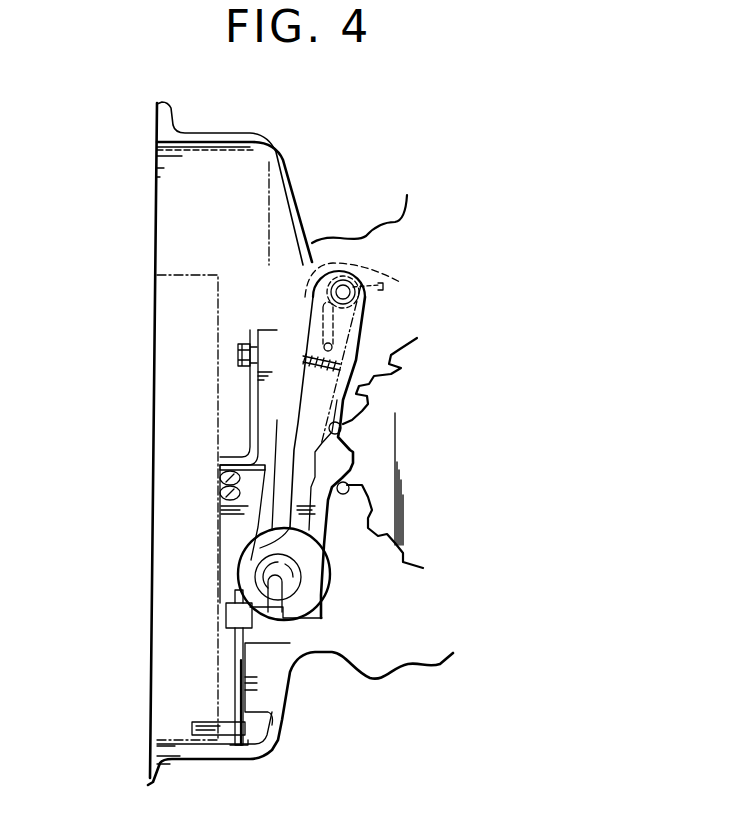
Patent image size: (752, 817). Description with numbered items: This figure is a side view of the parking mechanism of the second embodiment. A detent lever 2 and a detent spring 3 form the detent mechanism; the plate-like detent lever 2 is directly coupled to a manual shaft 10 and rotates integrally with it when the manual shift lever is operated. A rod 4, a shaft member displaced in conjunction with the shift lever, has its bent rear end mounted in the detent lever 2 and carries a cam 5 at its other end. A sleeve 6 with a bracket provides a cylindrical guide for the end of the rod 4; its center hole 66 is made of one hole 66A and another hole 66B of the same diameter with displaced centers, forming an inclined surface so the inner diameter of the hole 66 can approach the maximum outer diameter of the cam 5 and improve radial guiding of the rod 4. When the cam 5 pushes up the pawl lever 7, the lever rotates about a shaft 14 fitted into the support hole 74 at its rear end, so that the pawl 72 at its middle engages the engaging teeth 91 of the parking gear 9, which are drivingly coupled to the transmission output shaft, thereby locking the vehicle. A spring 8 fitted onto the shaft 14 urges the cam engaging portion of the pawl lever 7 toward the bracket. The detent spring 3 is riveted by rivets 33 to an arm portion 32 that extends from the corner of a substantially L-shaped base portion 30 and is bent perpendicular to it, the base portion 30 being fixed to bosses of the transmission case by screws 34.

The detent lever 2 is at (237, 687).
The detent spring 3 is at (237, 552).
The rod 4 is at (305, 600).
The cam 5 is at (300, 580).
The sleeve 6 is at (290, 548).
The pawl lever 7 is at (325, 366).
The spring 8 is at (333, 335).
The parking gear 9 is at (417, 570).
The manual shaft 10 is at (272, 712).
The shaft 14 is at (353, 293).
The base portion 30 is at (250, 412).
The arm portion 32 is at (232, 458).
The rivets 33 is at (220, 476).
The screws 34 is at (238, 352).
The center hole 66 is at (240, 582).
The hole 66A is at (237, 622).
The hole 66B is at (228, 565).
The pawl 72 is at (350, 462).
The support hole 74 is at (343, 292).
The engaging teeth 91 is at (340, 424).